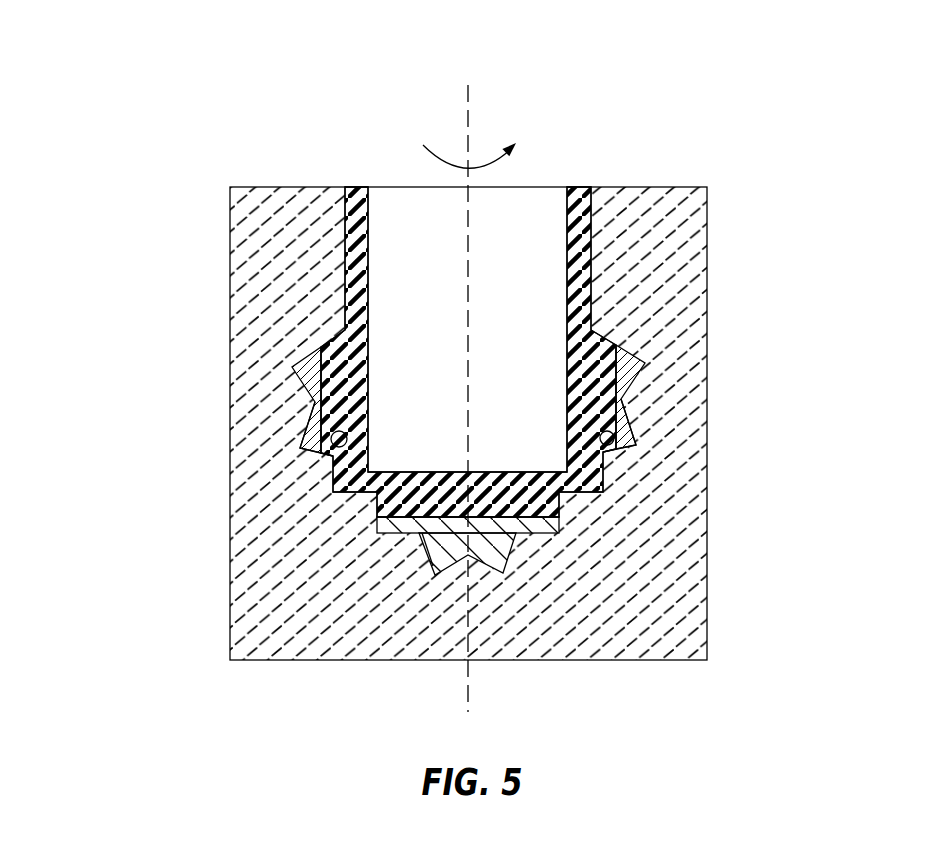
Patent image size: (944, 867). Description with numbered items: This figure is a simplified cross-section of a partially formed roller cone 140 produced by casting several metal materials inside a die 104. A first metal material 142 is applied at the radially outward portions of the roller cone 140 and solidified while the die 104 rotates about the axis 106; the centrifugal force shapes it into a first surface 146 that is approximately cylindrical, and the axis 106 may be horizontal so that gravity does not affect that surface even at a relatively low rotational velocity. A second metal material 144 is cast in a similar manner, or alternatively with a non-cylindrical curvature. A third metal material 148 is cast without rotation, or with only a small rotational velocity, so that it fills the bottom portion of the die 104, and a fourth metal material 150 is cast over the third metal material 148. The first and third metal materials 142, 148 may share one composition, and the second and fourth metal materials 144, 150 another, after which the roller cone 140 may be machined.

The roller cone 140 is at (200, 122).
The second metal material 144 is at (362, 187).
The axis 106 is at (468, 117).
The first metal material 142 is at (292, 367).
The first surface 146 is at (337, 457).
The die 104 is at (680, 578).
The third metal material 148 is at (433, 576).
The fourth metal material 150 is at (557, 507).